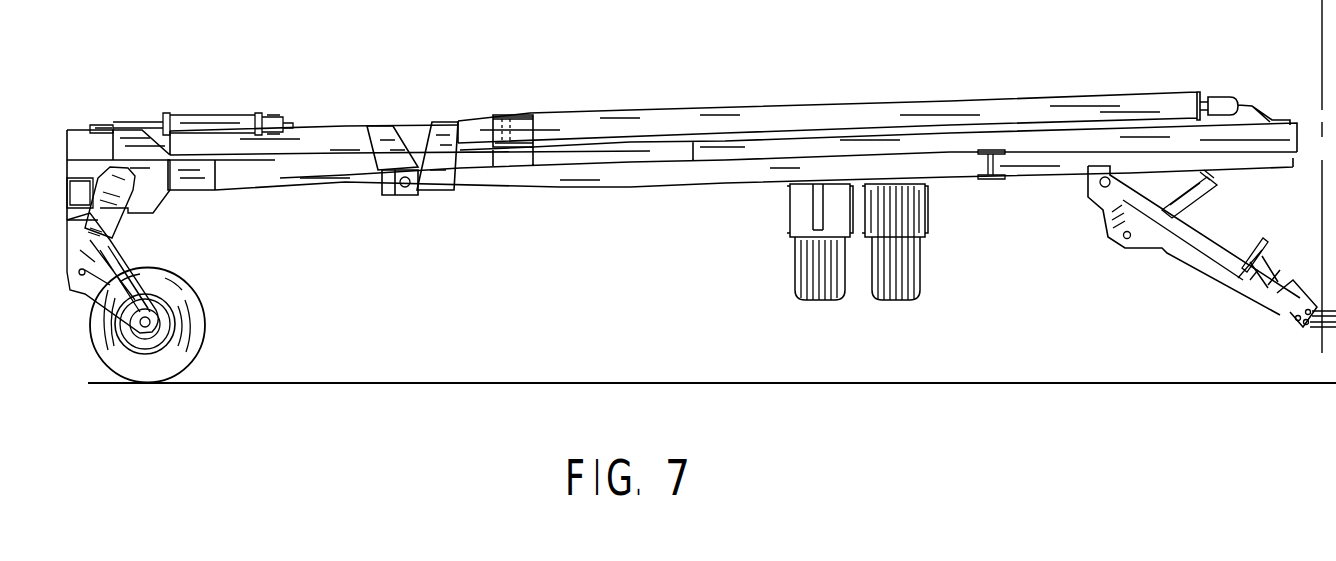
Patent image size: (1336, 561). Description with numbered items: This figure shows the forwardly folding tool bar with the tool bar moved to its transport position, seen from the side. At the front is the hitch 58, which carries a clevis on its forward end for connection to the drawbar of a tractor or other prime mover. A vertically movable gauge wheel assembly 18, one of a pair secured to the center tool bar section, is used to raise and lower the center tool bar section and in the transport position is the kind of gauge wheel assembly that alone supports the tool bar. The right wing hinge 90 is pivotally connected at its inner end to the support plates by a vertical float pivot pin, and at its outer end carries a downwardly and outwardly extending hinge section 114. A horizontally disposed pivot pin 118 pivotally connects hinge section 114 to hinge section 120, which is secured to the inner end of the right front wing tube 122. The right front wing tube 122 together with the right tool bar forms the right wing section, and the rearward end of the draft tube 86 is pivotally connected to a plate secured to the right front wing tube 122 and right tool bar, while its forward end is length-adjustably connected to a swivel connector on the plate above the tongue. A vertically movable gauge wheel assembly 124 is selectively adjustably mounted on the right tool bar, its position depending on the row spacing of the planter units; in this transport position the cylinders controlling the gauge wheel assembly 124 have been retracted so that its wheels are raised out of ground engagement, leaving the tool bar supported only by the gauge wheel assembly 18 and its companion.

The gauge wheel assembly 18 is at (185, 300).
The hitch 58 is at (1212, 258).
The draft tube 86 is at (925, 100).
The right wing hinge 90 is at (310, 176).
The hinge section 114 is at (392, 132).
The pivot pin 118 is at (413, 190).
The hinge section 120 is at (452, 165).
The right front wing tube 122 is at (482, 128).
The gauge wheel assembly 124 is at (910, 253).